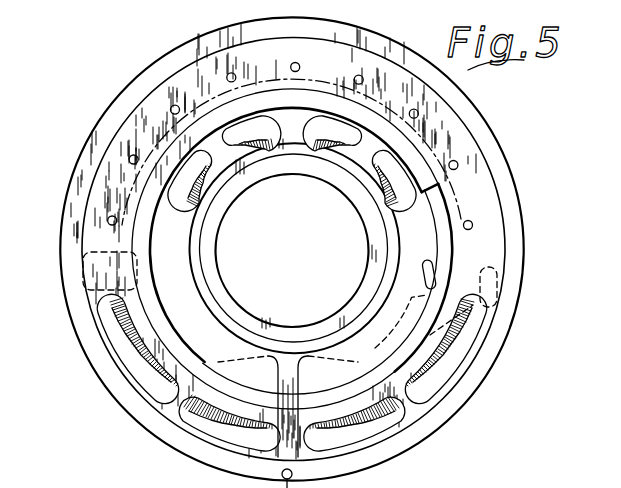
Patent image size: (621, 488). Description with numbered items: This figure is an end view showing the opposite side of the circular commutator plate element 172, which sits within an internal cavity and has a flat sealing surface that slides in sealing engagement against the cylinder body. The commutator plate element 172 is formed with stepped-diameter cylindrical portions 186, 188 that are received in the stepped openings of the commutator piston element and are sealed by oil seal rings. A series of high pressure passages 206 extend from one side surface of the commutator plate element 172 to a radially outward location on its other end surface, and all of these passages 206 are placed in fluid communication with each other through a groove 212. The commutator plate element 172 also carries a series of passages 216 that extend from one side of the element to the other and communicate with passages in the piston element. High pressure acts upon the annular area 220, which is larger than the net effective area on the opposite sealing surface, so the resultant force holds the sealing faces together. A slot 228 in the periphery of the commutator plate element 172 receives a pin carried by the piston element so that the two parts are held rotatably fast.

The cylindrical portion 188 is at (186, 62).
The commutator plate element 172 is at (470, 155).
The annular area 220 is at (452, 135).
The cylindrical portion 186 is at (445, 192).
The passages 216 is at (257, 140).
The groove 212 is at (136, 364).
The high pressure passages 206 is at (110, 357).
The slot 228 is at (262, 486).